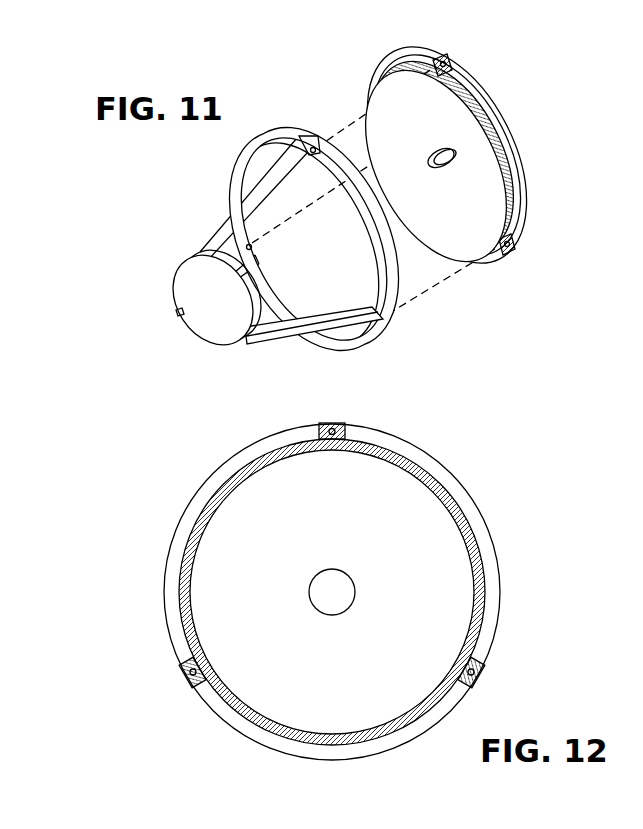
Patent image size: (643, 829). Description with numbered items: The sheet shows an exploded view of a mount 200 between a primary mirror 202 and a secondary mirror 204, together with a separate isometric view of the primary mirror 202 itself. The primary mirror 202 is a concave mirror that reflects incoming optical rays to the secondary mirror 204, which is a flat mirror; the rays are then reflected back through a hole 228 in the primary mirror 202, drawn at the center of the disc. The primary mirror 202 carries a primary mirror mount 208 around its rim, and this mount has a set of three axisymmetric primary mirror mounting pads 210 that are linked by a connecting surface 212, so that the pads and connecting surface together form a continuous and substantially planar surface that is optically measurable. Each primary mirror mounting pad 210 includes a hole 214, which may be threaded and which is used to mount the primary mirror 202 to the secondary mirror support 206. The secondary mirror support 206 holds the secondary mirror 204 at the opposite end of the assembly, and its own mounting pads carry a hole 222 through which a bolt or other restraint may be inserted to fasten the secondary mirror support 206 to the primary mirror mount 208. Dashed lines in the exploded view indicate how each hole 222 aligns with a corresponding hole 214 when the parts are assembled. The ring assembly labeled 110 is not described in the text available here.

In FIG. 12, the ring assembly 110 is at (348, 426).
In FIG. 11, the mount 200 is at (318, 84).
In FIG. 11, the primary mirror 202 is at (505, 96).
In FIG. 12, the primary mirror 202 is at (210, 470).
In FIG. 11, the secondary mirror 204 is at (197, 283).
In FIG. 11, the secondary mirror support 206 is at (252, 212).
In FIG. 11, the primary mirror mount 208 is at (505, 132).
In FIG. 12, the primary mirror mount 208 is at (486, 546).
In FIG. 11, the primary mirror mounting pads 210 is at (438, 56).
In FIG. 12, the primary mirror mounting pads 210 is at (192, 684).
In FIG. 11, the connecting surface 212 is at (512, 166).
In FIG. 12, the connecting surface 212 is at (455, 502).
In FIG. 11, the hole 214 is at (455, 66).
In FIG. 12, the hole 214 is at (324, 424).
In FIG. 11, the hole 222 is at (313, 146).
In FIG. 11, the hole 228 is at (456, 166).
In FIG. 12, the hole 228 is at (345, 596).